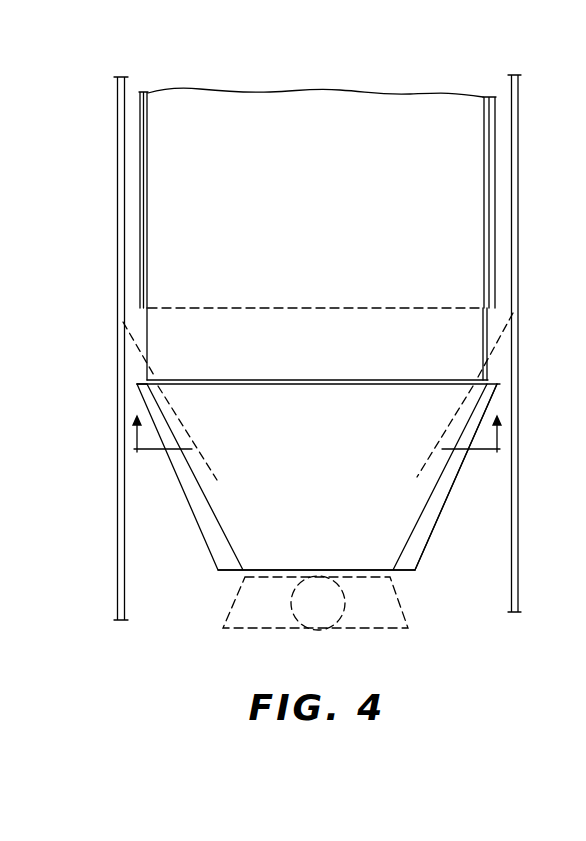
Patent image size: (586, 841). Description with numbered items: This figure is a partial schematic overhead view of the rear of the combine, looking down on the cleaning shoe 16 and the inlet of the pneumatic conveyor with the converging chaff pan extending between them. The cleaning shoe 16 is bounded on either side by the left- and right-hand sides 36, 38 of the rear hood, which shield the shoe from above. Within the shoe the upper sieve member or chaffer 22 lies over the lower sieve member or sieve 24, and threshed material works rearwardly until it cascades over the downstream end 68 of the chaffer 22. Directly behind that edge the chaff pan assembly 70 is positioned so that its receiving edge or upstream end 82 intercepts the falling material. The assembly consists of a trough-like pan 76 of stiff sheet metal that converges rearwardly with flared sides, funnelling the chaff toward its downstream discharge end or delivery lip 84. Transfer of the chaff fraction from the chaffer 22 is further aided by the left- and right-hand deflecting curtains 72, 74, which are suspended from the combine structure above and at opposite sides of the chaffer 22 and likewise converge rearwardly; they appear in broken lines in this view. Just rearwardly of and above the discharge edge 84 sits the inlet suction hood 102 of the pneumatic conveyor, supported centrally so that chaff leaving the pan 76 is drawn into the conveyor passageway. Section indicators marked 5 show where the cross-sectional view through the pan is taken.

The cleaning shoe 16 is at (226, 58).
The left-hand side 36 is at (117, 118).
The right-hand side 38 is at (518, 125).
The sieve 24 is at (495, 235).
The chaffer 22 is at (405, 356).
The downstream end 68 is at (240, 380).
The receiving edge 82 is at (281, 386).
The pan 76 is at (306, 496).
The chaff pan assembly 70 is at (439, 576).
The discharge end 84 is at (258, 570).
The left-hand deflecting curtain 72 is at (168, 403).
The right-hand deflecting curtain 74 is at (462, 400).
The section line 5- 5 is at (315, 449).
The inlet suction hood 102 is at (366, 641).